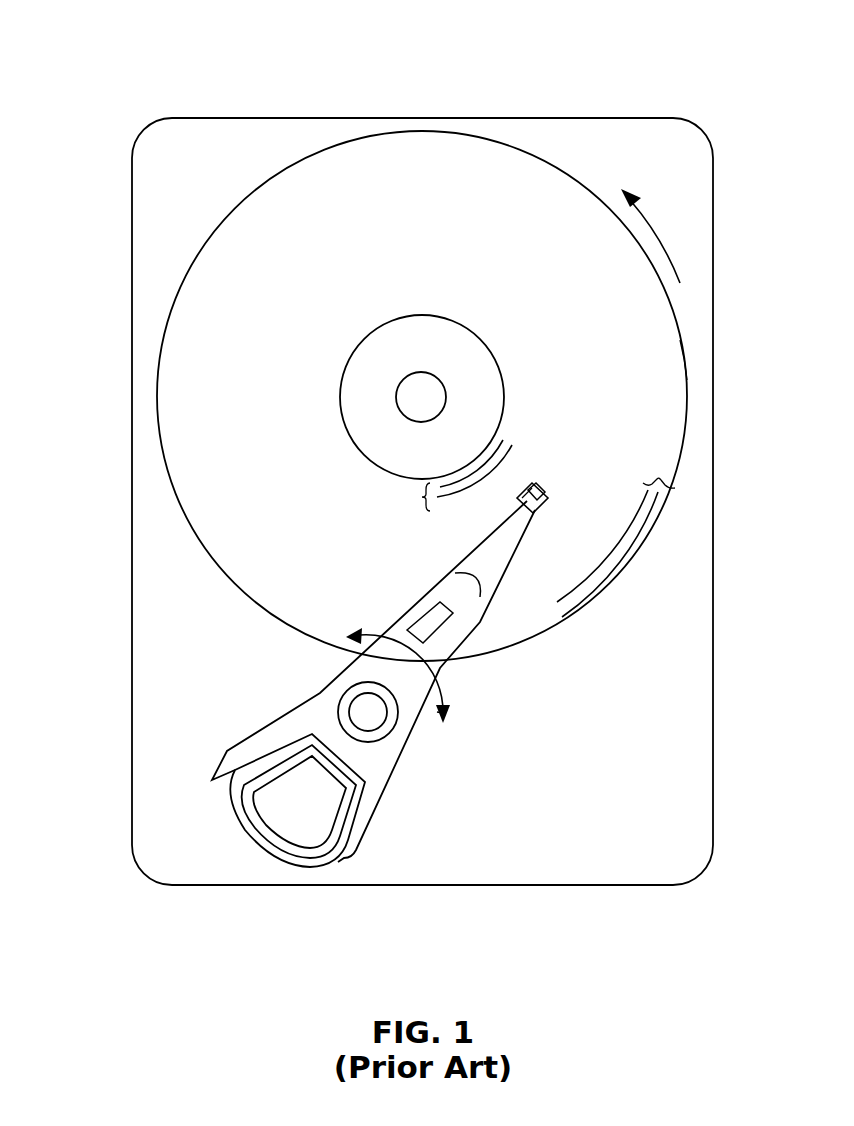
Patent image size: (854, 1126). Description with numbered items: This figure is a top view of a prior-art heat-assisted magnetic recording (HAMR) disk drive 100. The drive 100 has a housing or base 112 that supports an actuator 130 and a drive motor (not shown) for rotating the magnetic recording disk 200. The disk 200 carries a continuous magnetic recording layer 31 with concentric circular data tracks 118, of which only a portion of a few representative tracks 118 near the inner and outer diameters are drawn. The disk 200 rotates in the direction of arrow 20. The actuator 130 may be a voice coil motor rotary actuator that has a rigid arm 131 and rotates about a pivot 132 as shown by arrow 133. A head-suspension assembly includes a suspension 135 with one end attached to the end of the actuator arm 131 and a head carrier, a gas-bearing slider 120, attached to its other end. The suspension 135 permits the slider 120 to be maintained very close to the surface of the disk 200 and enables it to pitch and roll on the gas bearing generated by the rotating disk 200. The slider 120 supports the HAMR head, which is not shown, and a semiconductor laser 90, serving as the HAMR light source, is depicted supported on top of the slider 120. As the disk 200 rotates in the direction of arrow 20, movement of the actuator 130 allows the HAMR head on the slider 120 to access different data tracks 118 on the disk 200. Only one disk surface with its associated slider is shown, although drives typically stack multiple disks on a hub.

The HAMR disk drive 100 is at (131, 43).
The housing or base 112 is at (642, 118).
The disk 200 is at (288, 170).
The continuous magnetic recording layer 31 is at (666, 358).
The arrow 20 is at (658, 223).
The data tracks 118 is at (422, 497).
The semiconductor laser 90 is at (546, 491).
The gas-bearing slider 120 is at (540, 507).
The suspension 135 is at (465, 562).
The rigid arm 131 is at (413, 618).
The arrow 133 is at (449, 692).
The pivot 132 is at (356, 707).
The actuator 130 is at (211, 765).